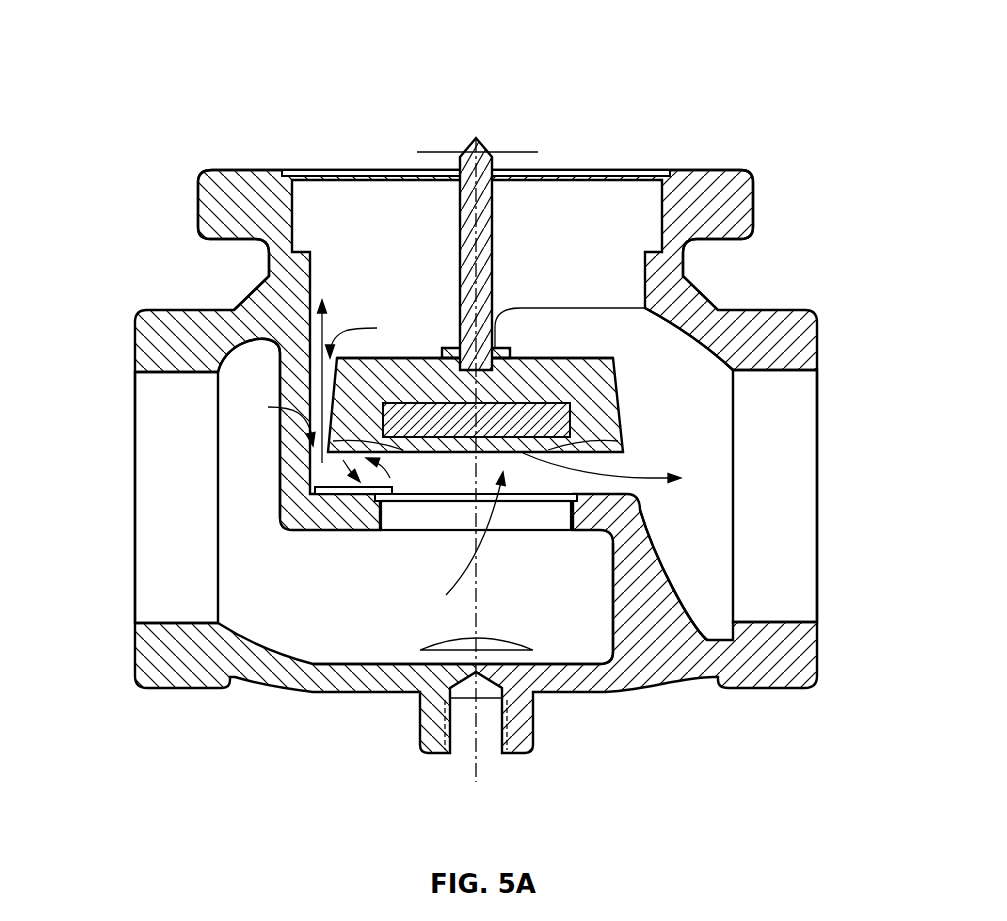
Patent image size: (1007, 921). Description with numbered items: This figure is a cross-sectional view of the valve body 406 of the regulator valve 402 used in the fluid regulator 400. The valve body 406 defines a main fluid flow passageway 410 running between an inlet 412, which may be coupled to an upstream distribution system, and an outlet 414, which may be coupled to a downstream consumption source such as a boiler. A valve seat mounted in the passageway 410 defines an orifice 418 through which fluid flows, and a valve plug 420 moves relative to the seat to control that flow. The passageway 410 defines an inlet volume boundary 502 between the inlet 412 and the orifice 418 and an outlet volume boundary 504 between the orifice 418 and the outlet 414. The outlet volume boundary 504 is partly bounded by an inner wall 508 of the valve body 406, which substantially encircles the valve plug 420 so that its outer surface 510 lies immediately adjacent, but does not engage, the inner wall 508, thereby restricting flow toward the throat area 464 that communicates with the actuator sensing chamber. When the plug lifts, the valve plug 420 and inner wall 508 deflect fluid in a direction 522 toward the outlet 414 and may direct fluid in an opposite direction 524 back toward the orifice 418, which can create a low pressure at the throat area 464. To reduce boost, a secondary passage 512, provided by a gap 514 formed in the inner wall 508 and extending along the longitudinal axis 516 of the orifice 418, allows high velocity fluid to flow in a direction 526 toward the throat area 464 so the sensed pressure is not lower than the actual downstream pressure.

The fluid regulator 400 is at (93, 53).
The regulator valve 402 is at (152, 235).
The valve body 406 is at (313, 692).
The main fluid flow passageway 410 is at (713, 556).
The inlet 412 is at (135, 495).
The outlet 414 is at (817, 493).
The orifice 418 is at (462, 513).
The valve plug 420 is at (573, 358).
The throat area 464 is at (307, 217).
The inlet volume boundary 502 is at (298, 573).
The outlet volume boundary 504 is at (708, 518).
The inner wall 508 is at (302, 348).
The outer surface 510 is at (625, 410).
The secondary passage 512 is at (269, 420).
The gap 514 is at (373, 336).
The longitudinal axis 516 is at (475, 210).
The direction 522 is at (646, 470).
The opposite direction 524 is at (340, 468).
The direction 526 is at (327, 327).